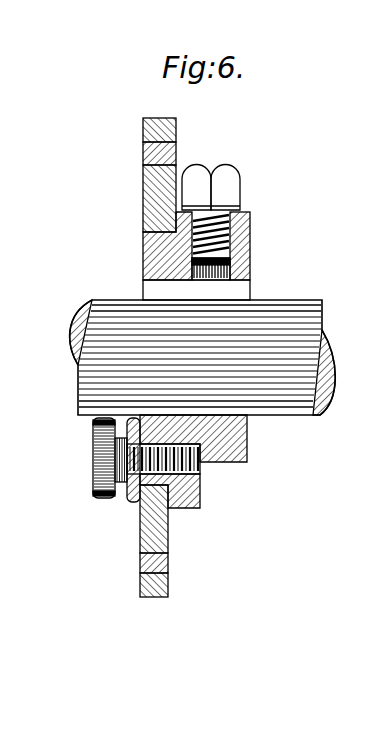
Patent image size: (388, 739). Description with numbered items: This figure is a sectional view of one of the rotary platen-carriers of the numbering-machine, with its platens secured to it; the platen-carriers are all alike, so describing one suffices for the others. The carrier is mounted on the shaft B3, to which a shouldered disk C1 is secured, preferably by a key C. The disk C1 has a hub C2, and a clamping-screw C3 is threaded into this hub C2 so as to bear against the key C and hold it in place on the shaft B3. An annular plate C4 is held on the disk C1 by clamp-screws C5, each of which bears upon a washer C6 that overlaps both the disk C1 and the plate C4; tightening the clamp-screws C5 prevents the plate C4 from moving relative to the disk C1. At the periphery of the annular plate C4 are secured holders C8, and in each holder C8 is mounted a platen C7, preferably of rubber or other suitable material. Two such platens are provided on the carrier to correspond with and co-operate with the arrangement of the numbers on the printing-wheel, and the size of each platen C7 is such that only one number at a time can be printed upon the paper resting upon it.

The key C is at (243, 290).
The shouldered disk C1 is at (143, 250).
The hub C2 is at (251, 226).
The clamping-screw C3 is at (241, 211).
The annular plate C4 is at (139, 533).
The clamp-screw C5 is at (116, 468).
The washer C6 is at (128, 498).
The platen C7 is at (146, 119).
The holder C8 is at (145, 151).
The shaft B3 is at (290, 302).